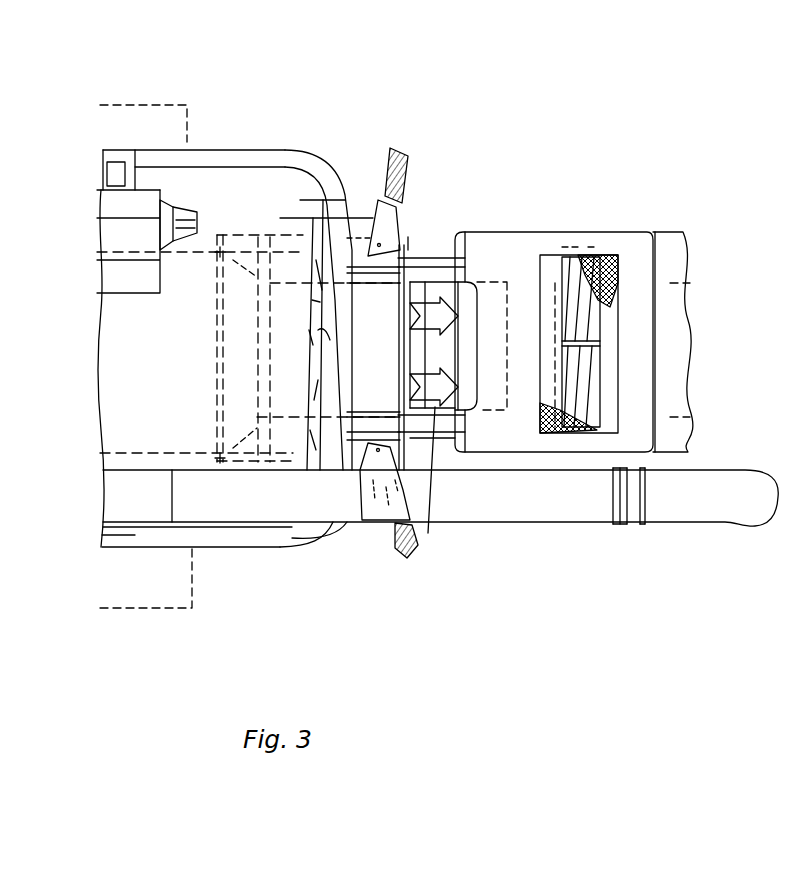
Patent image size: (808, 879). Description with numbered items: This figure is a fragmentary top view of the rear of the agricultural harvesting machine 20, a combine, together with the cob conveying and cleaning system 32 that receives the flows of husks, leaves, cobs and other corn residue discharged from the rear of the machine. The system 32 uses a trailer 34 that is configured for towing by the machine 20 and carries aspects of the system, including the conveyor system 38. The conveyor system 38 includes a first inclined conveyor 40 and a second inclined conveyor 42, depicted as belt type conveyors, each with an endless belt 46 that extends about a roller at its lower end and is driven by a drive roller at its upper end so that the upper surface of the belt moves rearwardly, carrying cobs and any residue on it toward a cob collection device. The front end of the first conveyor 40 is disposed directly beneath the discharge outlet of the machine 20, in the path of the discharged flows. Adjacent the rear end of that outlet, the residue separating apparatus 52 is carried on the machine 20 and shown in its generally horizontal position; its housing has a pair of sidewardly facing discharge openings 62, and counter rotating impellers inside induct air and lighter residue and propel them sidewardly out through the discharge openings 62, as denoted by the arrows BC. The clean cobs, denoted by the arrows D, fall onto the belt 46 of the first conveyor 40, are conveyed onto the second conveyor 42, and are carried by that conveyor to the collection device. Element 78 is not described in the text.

The agricultural harvesting machine 20 is at (253, 90).
The cob conveying and cleaning system 32 is at (733, 126).
The trailer 34 is at (617, 232).
The conveyor system 38 is at (463, 303).
The first inclined conveyor 40 is at (437, 258).
The second inclined conveyor 42 is at (668, 278).
The endless belt 46 is at (452, 407).
The residue separating apparatus 52 is at (357, 522).
The discharge openings 62 is at (403, 218).
The flexible wall 78 is at (303, 218).
The arrows denoting sideward residue flow BC is at (388, 176).
The arrows denoting clean cob flow D is at (424, 390).